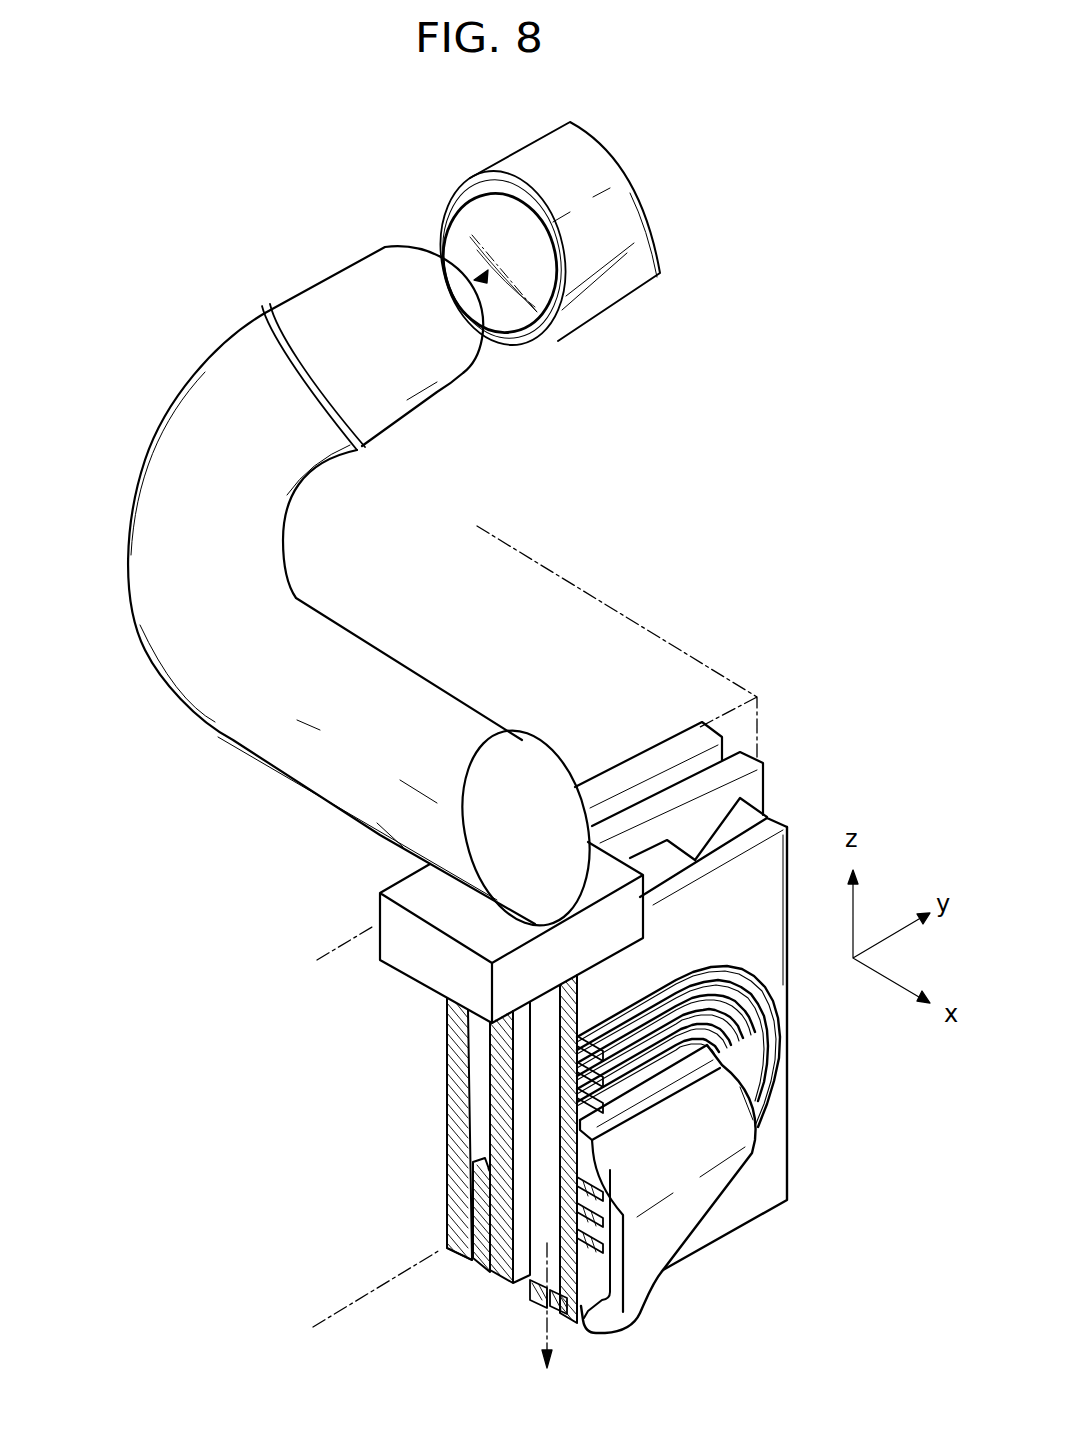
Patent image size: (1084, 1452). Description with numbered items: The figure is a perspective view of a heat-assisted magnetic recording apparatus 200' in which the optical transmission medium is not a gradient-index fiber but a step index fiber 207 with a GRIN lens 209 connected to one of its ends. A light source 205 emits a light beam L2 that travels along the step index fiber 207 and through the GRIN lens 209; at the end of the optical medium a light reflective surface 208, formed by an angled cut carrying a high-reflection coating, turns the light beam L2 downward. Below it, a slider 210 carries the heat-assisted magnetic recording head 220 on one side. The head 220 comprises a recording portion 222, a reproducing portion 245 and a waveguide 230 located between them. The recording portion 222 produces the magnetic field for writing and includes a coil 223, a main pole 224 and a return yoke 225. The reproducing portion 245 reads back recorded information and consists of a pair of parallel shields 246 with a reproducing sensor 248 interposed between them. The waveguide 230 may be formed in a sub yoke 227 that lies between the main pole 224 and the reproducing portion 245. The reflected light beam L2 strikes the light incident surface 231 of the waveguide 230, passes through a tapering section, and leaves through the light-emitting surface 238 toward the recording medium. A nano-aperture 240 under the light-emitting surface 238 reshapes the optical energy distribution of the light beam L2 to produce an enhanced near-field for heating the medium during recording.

The recording apparatus 200' is at (292, 585).
The light source 205 is at (523, 167).
The step index fiber 207 is at (303, 753).
The light reflective surface 208 is at (520, 760).
The GRIN lens 209 is at (410, 952).
The slider 210 is at (597, 615).
The heat-assisted magnetic recording head 220 is at (768, 762).
The recording portion 222 is at (870, 1082).
The coil 223 is at (767, 1093).
The main pole 224 is at (773, 1125).
The return yoke 225 is at (740, 1153).
The sub yoke 227 is at (715, 830).
The waveguide 230 is at (527, 1098).
The light incident surface 231 is at (658, 868).
The light-emitting surface 238 is at (570, 1322).
The nano-aperture 240 is at (530, 1287).
The reproducing portion 245 is at (372, 1233).
The pair of parallel shields 246 is at (498, 1256).
The reproducing sensor 248 is at (477, 1202).
The light beam L2 is at (485, 270).